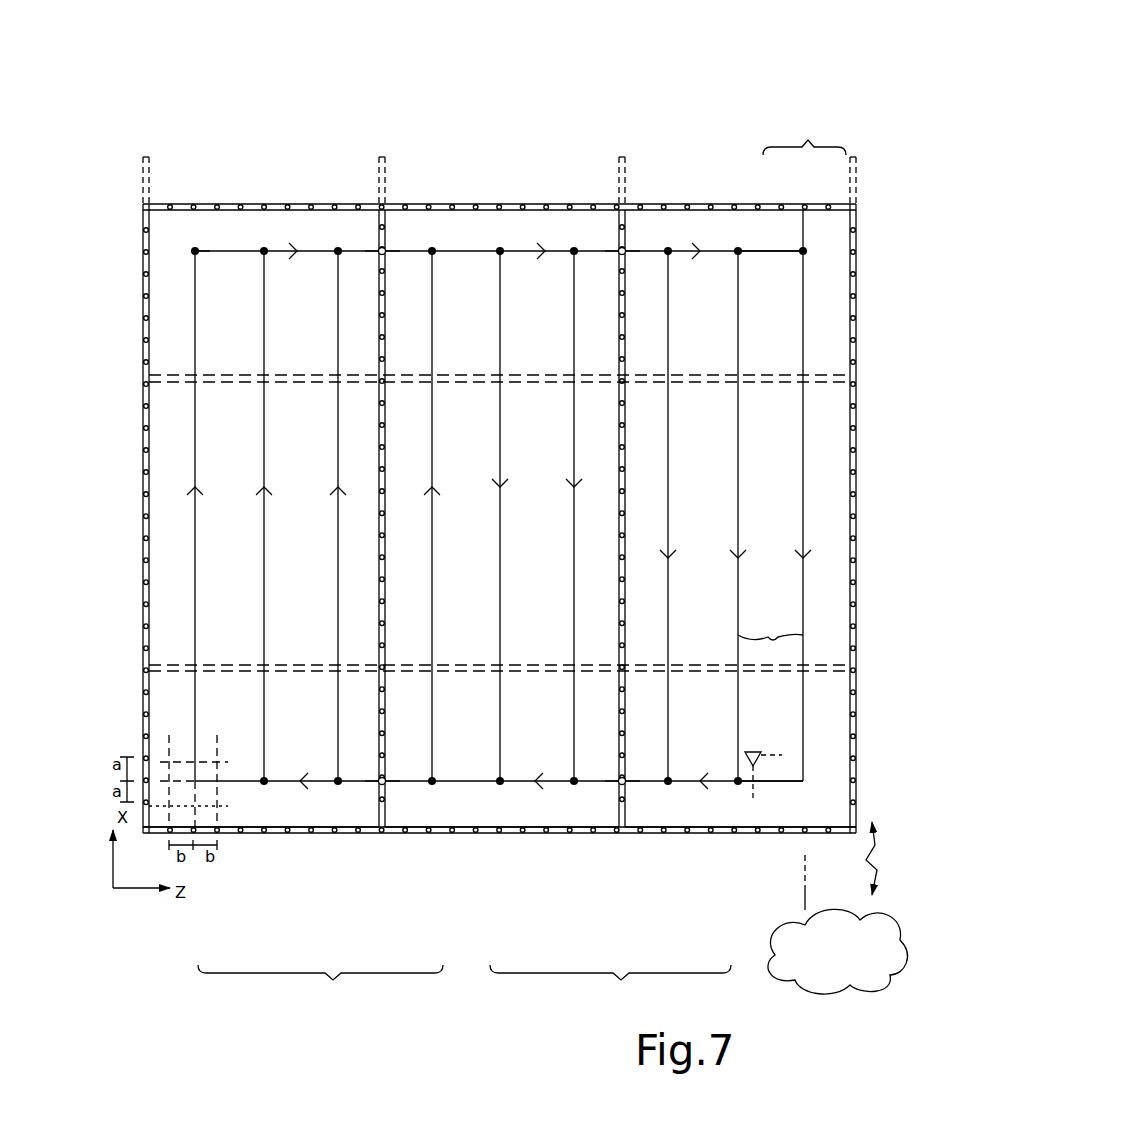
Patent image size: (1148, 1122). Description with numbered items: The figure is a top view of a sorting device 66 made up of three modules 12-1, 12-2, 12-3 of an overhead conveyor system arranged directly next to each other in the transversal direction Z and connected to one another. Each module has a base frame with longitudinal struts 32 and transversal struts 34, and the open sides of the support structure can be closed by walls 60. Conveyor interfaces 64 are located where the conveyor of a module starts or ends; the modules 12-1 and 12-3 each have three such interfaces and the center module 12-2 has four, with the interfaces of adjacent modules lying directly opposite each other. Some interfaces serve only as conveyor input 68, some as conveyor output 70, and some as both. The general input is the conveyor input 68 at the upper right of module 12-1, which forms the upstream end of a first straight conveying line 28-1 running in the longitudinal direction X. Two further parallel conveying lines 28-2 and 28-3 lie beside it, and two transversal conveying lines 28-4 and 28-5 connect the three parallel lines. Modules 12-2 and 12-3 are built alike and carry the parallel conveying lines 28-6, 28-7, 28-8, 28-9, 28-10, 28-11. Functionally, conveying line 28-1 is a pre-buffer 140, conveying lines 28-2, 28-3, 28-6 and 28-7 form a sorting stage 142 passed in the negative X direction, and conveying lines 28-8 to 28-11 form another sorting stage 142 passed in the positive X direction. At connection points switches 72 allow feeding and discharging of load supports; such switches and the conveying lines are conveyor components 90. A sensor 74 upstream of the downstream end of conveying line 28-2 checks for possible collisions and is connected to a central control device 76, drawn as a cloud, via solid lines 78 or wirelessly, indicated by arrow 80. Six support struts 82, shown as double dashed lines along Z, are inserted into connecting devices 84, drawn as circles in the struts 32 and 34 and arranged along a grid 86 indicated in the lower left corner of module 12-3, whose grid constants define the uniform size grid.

The module 12-1 is at (700, 838).
The center module 12-2 is at (458, 838).
The module 12-3 is at (245, 838).
The first conveying line 28-1 is at (805, 508).
The conveying line 28-2 is at (740, 510).
The conveying line 28-3 is at (670, 512).
The conveying line 28-4 is at (762, 783).
The conveying line 28-5 is at (790, 250).
The conveying line 28-6 is at (573, 503).
The conveying line 28-7 is at (500, 503).
The conveying line 28-8 is at (432, 508).
The conveying line 28-9 is at (338, 514).
The conveying line 28-10 is at (264, 514).
The conveying line 28-11 is at (195, 516).
The longitudinal strut 32 is at (857, 607).
The transversal strut 34 is at (540, 203).
The wall 60 is at (455, 204).
The conveyor interface 64 is at (210, 193).
The sorting device 66 is at (523, 130).
The conveyor input 68 is at (390, 257).
The conveyor output 70 is at (190, 238).
The switch 72 is at (574, 249).
The sensor 74 is at (748, 750).
The central control device 76 is at (856, 963).
The solid line 78 is at (808, 893).
The arrow 80 is at (880, 858).
The support strut 82 is at (226, 376).
The connecting device 84 is at (341, 204).
The grid 86 is at (182, 792).
The conveyor component 90 is at (770, 625).
The pre-buffer 140 is at (804, 136).
The sorting stage 142 is at (464, 984).